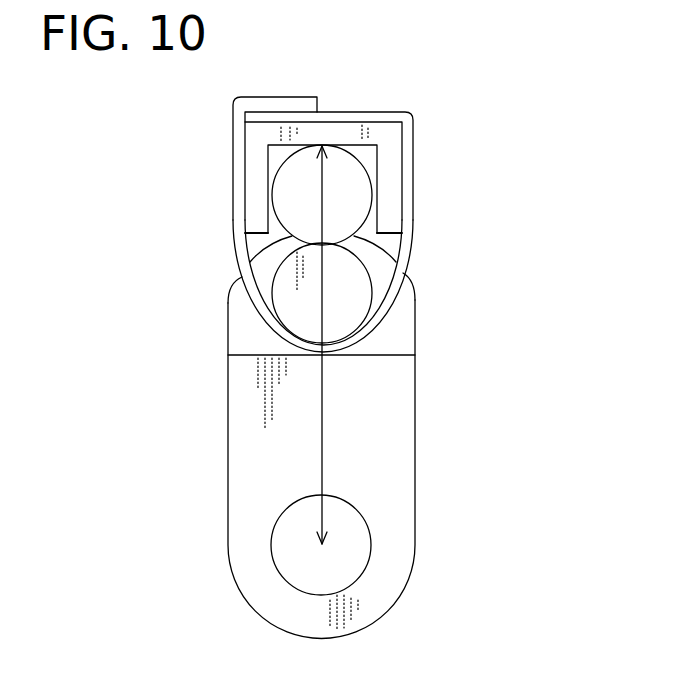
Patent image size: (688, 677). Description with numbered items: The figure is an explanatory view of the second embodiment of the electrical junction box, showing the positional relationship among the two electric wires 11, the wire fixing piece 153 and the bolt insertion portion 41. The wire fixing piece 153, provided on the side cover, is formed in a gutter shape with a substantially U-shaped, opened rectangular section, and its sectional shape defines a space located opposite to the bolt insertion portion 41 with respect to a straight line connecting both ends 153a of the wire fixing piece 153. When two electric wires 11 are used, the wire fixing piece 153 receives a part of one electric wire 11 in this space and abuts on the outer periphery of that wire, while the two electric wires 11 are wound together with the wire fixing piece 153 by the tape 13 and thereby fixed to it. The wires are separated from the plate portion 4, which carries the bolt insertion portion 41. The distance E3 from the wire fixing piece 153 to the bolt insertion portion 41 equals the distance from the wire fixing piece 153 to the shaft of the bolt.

The tape 13 is at (408, 132).
The wire fixing piece 153 is at (390, 168).
The ends of the wire fixing piece 153a is at (253, 218).
The electric wire 11 is at (348, 212).
The plate portion 4 is at (418, 422).
The bolt insertion portion 41 is at (372, 555).
The distance from the wire fixing piece to the bolt insertion portion E3 is at (324, 413).